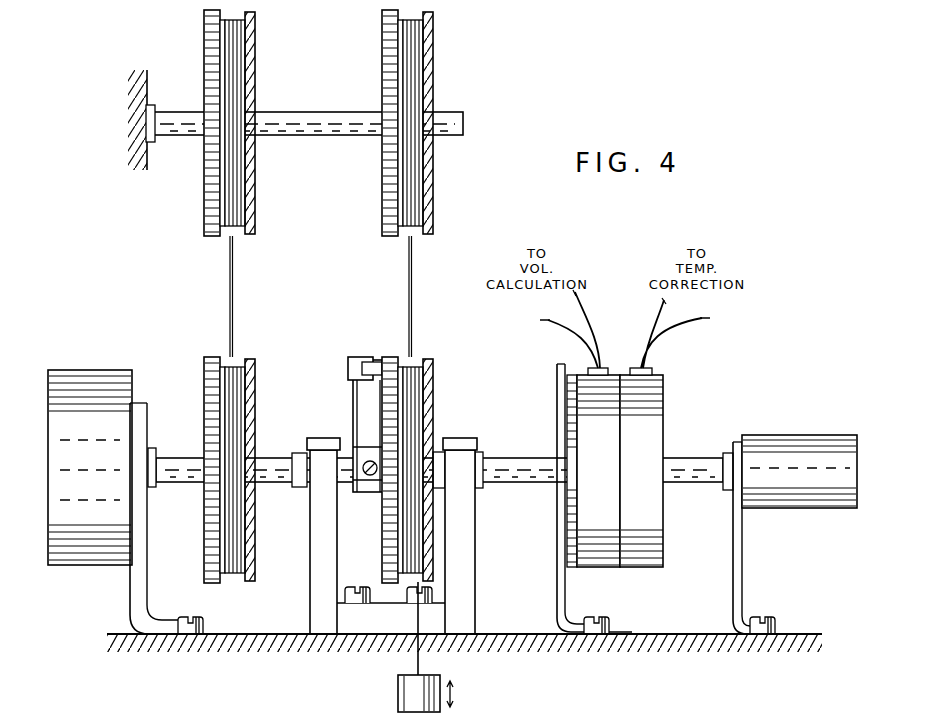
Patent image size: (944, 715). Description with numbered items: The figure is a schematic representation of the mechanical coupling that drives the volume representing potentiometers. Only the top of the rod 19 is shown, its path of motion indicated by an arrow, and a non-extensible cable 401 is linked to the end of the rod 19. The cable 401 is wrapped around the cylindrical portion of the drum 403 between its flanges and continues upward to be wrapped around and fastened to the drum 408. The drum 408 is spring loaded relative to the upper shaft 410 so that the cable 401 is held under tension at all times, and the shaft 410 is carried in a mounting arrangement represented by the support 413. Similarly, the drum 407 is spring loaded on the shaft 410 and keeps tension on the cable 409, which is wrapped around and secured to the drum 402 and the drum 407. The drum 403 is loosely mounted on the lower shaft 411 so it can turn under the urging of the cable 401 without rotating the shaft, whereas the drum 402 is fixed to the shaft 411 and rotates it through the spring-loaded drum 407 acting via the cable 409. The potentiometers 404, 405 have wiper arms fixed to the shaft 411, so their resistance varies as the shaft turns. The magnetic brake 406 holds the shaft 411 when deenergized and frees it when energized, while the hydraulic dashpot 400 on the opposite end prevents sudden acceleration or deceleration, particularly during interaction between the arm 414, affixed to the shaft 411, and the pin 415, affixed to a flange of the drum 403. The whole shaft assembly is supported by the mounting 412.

The shaft 410 is at (187, 118).
The support 413 is at (148, 150).
The drum 407 is at (205, 190).
The drum 408 is at (388, 190).
The cable 409 is at (234, 283).
The cable 401 is at (413, 283).
The hydraulic dashpot 400 is at (96, 380).
The drum 402 is at (212, 356).
The shaft 411 is at (190, 458).
The pin 415 is at (373, 362).
The arm 414 is at (352, 401).
The drum 403 is at (385, 517).
The mounting 412 is at (314, 593).
The potentiometer 404 is at (605, 553).
The potentiometer 405 is at (648, 553).
The magnetic brake 406 is at (810, 448).
The rod 19 is at (398, 693).